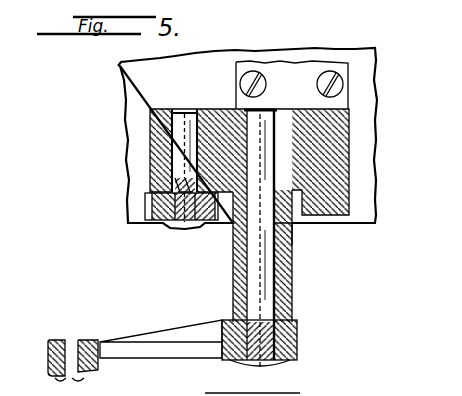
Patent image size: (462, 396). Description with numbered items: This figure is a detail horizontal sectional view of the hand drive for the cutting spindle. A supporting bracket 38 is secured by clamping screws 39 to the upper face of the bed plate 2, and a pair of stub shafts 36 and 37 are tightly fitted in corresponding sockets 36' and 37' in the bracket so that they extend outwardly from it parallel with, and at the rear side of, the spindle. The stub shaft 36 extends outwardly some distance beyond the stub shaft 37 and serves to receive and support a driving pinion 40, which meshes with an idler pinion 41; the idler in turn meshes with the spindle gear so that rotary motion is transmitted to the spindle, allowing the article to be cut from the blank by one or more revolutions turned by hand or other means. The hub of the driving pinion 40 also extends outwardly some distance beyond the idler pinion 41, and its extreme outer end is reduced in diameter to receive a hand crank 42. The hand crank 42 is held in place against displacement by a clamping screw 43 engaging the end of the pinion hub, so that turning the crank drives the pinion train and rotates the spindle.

The bed plate 2 is at (366, 137).
The stub shaft 36 is at (282, 238).
The socket 36' is at (320, 241).
The stub shaft 37 is at (184, 139).
The socket 37' is at (131, 150).
The supporting bracket 38 is at (338, 118).
The clamping screws 39 is at (317, 86).
The driving pinion 40 is at (284, 233).
The idler pinion 41 is at (140, 205).
The hand crank 42 is at (117, 350).
The clamping screw 43 is at (258, 362).